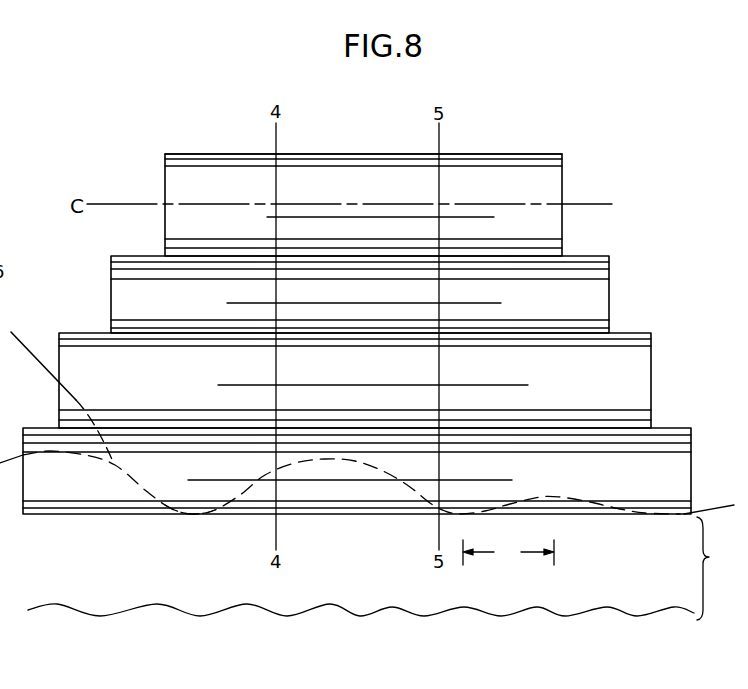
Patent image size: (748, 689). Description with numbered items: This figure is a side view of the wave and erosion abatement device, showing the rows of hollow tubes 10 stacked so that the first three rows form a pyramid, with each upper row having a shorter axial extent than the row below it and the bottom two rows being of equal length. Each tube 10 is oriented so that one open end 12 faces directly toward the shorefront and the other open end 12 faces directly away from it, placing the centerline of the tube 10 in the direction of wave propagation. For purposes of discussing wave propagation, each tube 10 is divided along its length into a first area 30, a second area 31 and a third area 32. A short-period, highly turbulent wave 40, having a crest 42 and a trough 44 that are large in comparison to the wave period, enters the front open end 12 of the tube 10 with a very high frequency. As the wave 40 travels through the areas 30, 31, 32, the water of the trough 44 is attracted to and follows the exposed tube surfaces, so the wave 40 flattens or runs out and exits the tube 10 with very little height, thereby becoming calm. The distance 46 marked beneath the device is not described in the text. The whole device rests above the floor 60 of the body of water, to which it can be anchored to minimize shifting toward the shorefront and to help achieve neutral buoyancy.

The tube 10 is at (357, 323).
The open end 12 is at (349, 194).
The first area of tube 30 is at (170, 154).
The second area of tube 31 is at (352, 154).
The third area of tube 32 is at (476, 154).
The turbulent wave 40 is at (47, 368).
The crest 42 is at (353, 462).
The trough 44 is at (182, 514).
The wavelength dimension 46 is at (508, 552).
The floor 60 is at (621, 616).